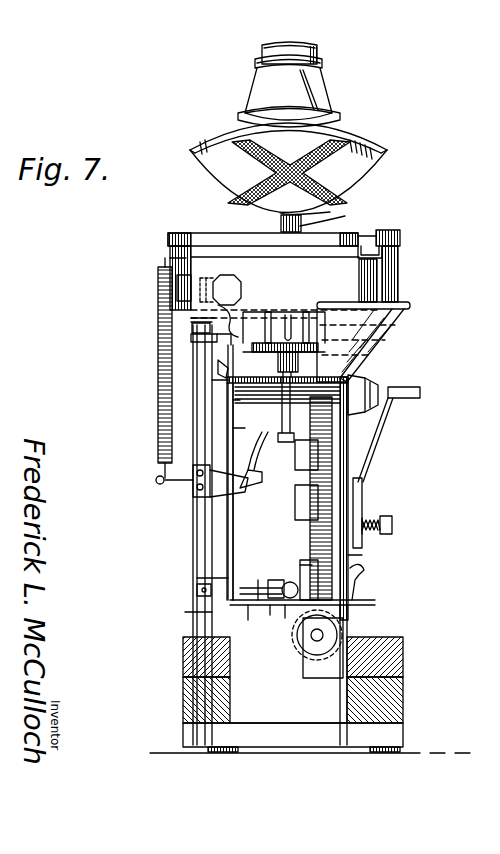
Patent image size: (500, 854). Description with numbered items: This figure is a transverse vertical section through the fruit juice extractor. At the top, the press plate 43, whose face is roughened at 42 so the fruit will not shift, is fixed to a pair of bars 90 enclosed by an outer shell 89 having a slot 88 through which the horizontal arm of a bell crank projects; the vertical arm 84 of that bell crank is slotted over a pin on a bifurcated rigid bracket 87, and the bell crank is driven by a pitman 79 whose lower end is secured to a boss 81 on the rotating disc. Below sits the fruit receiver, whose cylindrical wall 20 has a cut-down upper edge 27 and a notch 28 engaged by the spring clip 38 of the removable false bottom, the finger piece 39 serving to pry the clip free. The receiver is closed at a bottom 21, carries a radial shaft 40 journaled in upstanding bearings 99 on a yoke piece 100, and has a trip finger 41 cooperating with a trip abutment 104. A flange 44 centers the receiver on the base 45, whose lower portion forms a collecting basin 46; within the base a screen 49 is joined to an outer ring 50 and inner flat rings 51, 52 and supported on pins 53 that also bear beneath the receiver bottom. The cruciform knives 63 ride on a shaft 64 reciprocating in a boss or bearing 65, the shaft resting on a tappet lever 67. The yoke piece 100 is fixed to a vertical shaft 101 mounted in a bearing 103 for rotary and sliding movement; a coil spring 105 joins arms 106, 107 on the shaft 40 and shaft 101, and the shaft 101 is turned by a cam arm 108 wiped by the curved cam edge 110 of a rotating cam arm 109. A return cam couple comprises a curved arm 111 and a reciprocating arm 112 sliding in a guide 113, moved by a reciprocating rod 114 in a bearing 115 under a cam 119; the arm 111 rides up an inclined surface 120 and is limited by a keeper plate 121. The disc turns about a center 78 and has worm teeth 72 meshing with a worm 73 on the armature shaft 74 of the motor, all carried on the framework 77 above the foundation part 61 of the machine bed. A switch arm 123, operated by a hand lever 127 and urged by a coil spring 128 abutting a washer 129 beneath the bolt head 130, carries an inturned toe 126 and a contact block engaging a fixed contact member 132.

The bars 90 is at (317, 46).
The outer enclosing shell 89 is at (323, 68).
The roughened face of press plate 42 is at (338, 148).
The press plate 43 is at (380, 152).
The vertical arm of bell crank 84 is at (335, 211).
The bifurcated rigid bracket 87 is at (332, 224).
The pitman 79 is at (280, 224).
The notch 28 is at (372, 233).
The upper edge of side wall 27 is at (388, 235).
The spring clip 38 is at (400, 238).
The finger piece 39 is at (383, 254).
The cylindrical wall of fruit receiver 20 is at (398, 262).
The arm 106 is at (170, 258).
The shaft 40 is at (177, 290).
The yoke piece 100 is at (191, 319).
The trip abutment 104 is at (192, 327).
The upstanding bearings 99 is at (212, 275).
The trip finger 41 is at (228, 310).
The flat ring 51 is at (262, 343).
The bottom of receiver 21 is at (270, 330).
The knives 63 is at (290, 328).
The pins 53 is at (308, 325).
The flange 44 is at (408, 304).
The base 45 is at (400, 320).
The ring 50 is at (205, 340).
The screen 49 is at (225, 348).
The collecting basin 46 is at (218, 370).
The coil spring 105 is at (158, 385).
The vertical shaft 101 is at (195, 520).
The flat ring 52 is at (240, 382).
The boss or bearing 65 is at (245, 402).
The framework 77 is at (262, 430).
The shaft 64 is at (282, 405).
The center 78 is at (300, 505).
The slot 88 is at (348, 441).
The curved upper cam edge 110 is at (255, 468).
The rotating cam arm 109 is at (255, 492).
The cam arm 108 is at (205, 492).
The arm 107 is at (162, 486).
The tappet lever 67 is at (360, 430).
The operating hand lever 127 is at (420, 393).
The boss 81 is at (365, 462).
The switch arm 123 is at (362, 500).
The washer 129 is at (386, 520).
The coil spring 128 is at (372, 533).
The bolt head 130 is at (393, 525).
The inturned toe 126 is at (362, 556).
The fixed contact member 132 is at (362, 585).
The worm teeth 72 is at (375, 603).
The reciprocating arm 112 is at (258, 580).
The cam 119 is at (300, 565).
The bearing 115 is at (288, 582).
The keeper plate 121 is at (197, 578).
The inclined surface 120 is at (197, 591).
The bearing 103 is at (185, 612).
The foundation part 61 is at (403, 640).
The armature shaft 74 is at (318, 648).
The worm 73 is at (302, 660).
The curved arm 111 is at (248, 620).
The reciprocating rod 114 is at (285, 618).
The guide 113 is at (270, 615).